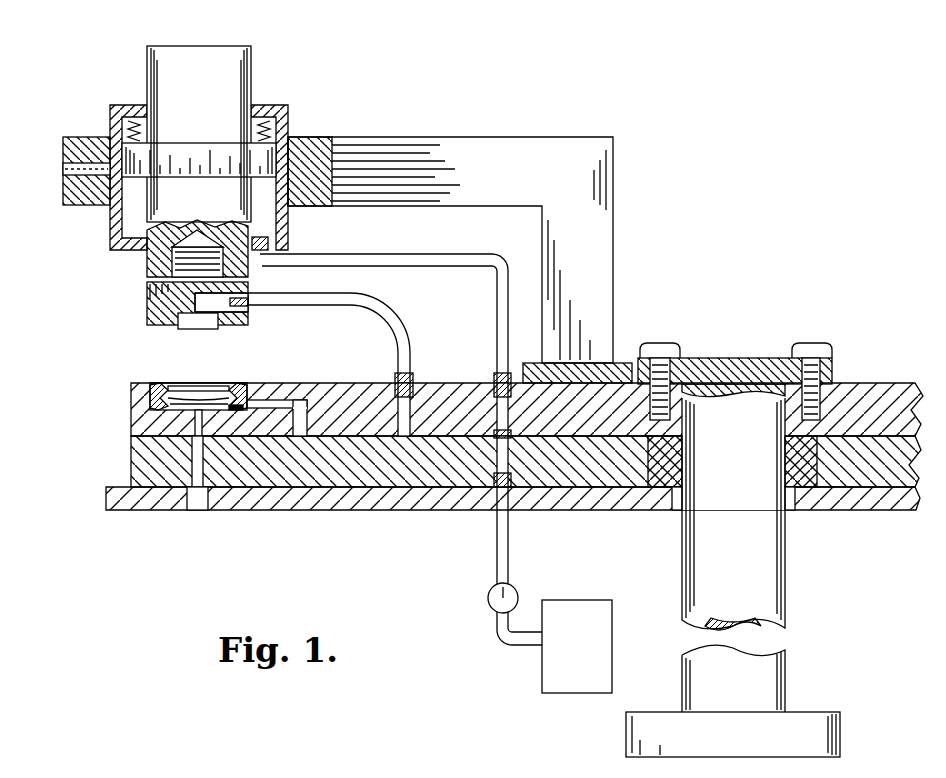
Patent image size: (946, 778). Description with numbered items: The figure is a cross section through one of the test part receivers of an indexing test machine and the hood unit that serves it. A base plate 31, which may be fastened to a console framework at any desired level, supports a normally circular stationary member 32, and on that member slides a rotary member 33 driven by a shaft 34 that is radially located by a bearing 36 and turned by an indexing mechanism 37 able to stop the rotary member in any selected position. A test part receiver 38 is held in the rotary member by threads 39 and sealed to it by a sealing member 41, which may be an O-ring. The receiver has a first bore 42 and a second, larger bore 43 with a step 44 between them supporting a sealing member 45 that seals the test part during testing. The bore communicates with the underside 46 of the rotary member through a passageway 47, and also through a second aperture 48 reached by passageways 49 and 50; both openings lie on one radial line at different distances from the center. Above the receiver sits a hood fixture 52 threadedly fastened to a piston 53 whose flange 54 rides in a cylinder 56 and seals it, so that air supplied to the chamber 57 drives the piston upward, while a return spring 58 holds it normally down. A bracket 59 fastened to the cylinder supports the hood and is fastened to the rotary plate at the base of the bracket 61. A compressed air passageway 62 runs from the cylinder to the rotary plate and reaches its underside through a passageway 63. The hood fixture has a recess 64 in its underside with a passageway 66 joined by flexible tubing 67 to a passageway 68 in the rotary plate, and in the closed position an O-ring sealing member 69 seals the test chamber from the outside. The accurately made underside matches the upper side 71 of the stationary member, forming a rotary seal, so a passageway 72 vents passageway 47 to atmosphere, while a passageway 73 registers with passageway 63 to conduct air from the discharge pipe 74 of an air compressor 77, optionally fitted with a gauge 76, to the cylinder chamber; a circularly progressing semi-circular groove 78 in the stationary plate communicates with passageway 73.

The base plate 31 is at (570, 511).
The stationary member 32 is at (600, 471).
The rotary member 33 is at (600, 421).
The shaft 34 is at (733, 358).
The bearing 36 is at (683, 460).
The indexing mechanism 37 is at (630, 727).
The test part receiver 38 is at (258, 390).
The threads 39 is at (150, 400).
The sealing member 41 is at (160, 418).
The first bore 42 is at (206, 396).
The second bore 43 is at (229, 386).
The step 44 is at (176, 437).
The sealing member 45 is at (177, 386).
The underside 46 is at (172, 437).
The passageway 47 is at (203, 424).
The second aperture 48 is at (308, 420).
The passageway 49 is at (295, 395).
The passageway 50 is at (243, 411).
The hood fixture 52 is at (148, 296).
The piston 53 is at (160, 262).
The flange 54 is at (220, 155).
The cylinder 56 is at (118, 226).
The chamber 57 is at (135, 208).
The return spring 58 is at (130, 126).
The bracket 59 is at (418, 145).
The base of the bracket 61 is at (623, 362).
The passageway 62 is at (370, 264).
The passageway 63 is at (496, 412).
The recess 64 is at (196, 329).
The passageway 66 is at (248, 316).
The flexible tubing 67 is at (352, 313).
The passageway 68 is at (411, 412).
The O-ring sealing member 69 is at (158, 383).
The upper side 71 is at (352, 440).
The passageway 72 is at (204, 467).
The passageway 73 is at (496, 462).
The discharge pipe 74 is at (496, 542).
The gauge 76 is at (488, 598).
The air compressor 77 is at (583, 654).
The semi-circular groove 78 is at (510, 439).